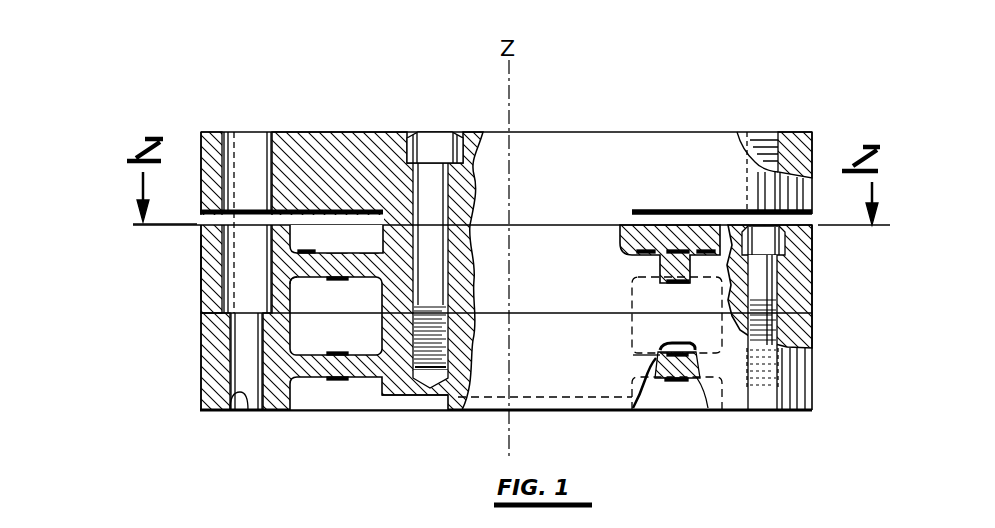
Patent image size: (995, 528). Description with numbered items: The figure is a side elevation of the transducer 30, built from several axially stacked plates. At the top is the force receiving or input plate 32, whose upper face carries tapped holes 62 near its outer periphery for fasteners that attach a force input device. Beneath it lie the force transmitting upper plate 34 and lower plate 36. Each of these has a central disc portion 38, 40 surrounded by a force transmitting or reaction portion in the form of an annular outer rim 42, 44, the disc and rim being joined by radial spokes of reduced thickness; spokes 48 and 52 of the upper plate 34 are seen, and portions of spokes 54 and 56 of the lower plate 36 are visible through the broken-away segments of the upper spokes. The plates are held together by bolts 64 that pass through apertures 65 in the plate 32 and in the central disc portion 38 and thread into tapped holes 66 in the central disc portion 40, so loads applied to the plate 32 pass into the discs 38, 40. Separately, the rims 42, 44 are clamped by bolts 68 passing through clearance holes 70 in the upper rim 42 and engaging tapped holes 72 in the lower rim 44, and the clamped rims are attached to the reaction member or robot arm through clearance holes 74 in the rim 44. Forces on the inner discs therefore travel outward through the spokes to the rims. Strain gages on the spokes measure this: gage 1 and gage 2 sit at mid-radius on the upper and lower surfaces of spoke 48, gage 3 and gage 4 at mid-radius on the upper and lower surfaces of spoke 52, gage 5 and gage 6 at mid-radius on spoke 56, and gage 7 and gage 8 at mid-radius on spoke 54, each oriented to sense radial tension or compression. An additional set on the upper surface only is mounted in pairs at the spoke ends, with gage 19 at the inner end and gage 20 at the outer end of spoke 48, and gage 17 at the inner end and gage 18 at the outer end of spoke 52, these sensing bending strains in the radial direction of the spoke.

The transducer 30 is at (304, 122).
The plate 32 is at (525, 132).
The upper plate 34 is at (193, 293).
The lower plate 36 is at (193, 360).
The annular outer rim 42 is at (201, 250).
The annular outer rim 44 is at (200, 400).
The tapped holes 62 is at (770, 135).
The bolts 64 is at (438, 200).
The apertures 65 is at (420, 162).
The tapped holes 66 is at (425, 378).
The bolts 68 is at (757, 225).
The clearance holes 70 is at (770, 268).
The tapped holes 72 is at (772, 312).
The strain gage 3 is at (335, 250).
The strain gage 17 is at (368, 250).
The strain gage 18 is at (300, 247).
The strain gage 19 is at (645, 250).
The strain gage 1 is at (672, 250).
The strain gage 20 is at (705, 250).
The strain gage 2 is at (680, 284).
The strain gage 4 is at (330, 282).
The strain gage 5 is at (672, 345).
The strain gage 6 is at (672, 385).
The strain gage 7 is at (340, 352).
The strain gage 8 is at (333, 382).
The central disc portion 38 is at (382, 282).
The central disc portion 40 is at (395, 395).
The spoke 48 is at (632, 262).
The spoke 52 is at (303, 278).
The spoke 54 is at (295, 380).
The spoke 56 is at (655, 395).
The clearance holes 74 is at (236, 412).